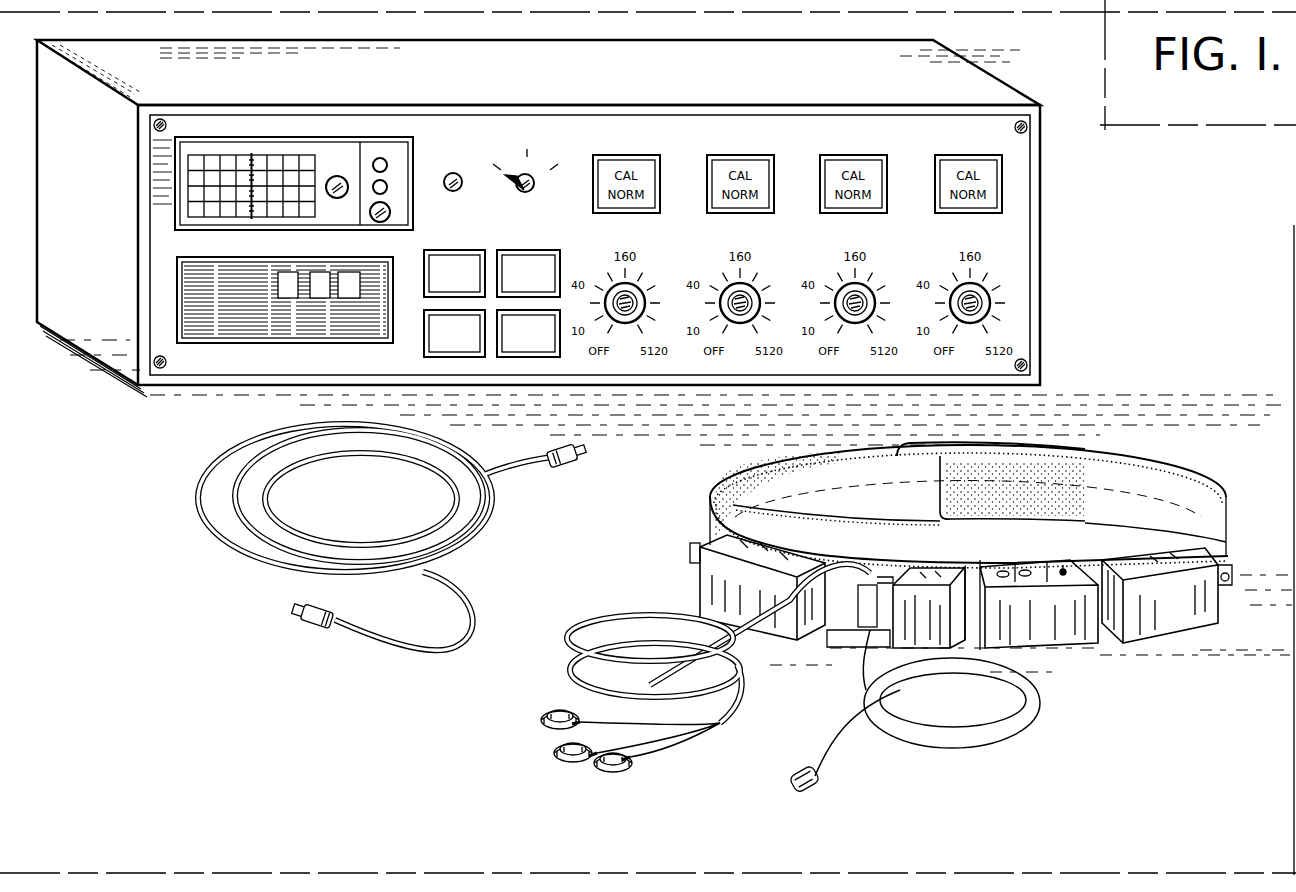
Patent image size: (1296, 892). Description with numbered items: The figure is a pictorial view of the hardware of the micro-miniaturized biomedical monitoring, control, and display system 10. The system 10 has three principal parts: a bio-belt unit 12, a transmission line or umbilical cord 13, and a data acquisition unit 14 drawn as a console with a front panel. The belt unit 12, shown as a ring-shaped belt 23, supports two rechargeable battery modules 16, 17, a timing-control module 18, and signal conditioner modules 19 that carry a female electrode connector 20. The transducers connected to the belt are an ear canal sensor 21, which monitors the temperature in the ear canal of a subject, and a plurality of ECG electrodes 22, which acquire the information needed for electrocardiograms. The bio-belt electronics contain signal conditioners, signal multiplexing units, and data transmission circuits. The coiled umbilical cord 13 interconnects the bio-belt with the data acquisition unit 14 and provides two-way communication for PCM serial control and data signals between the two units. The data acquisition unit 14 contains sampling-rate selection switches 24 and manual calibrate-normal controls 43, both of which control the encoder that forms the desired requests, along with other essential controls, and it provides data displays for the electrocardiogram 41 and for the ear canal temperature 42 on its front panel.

The biomedical monitoring, control, and display system 10 is at (100, 477).
The bio-belt unit 12 is at (1090, 438).
The umbilical cord 13 is at (228, 528).
The data acquisition unit 14 is at (1046, 212).
The rechargeable battery module 16 is at (725, 570).
The rechargeable battery module 17 is at (1178, 590).
The timing-control module 18 is at (1063, 620).
The signal conditioner modules 19 is at (921, 626).
The female electrode connector 20 is at (866, 603).
The ear canal sensor 21 is at (790, 780).
The ECG electrodes 22 is at (540, 744).
The belt 23 is at (815, 491).
The sampling-rate selection switches 24 is at (985, 300).
The electrocardiogram display 41 is at (208, 177).
The ear canal temperature display 42 is at (218, 283).
The calibrate-normal controls 43 is at (845, 160).